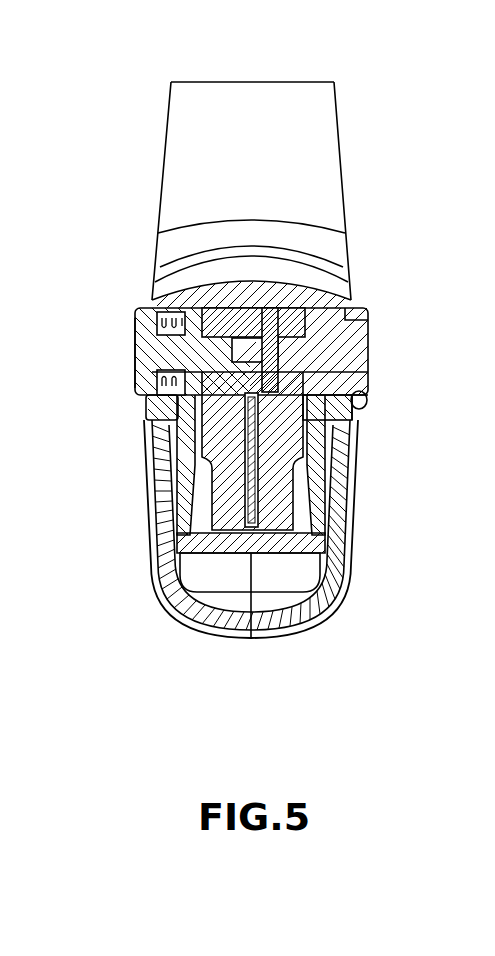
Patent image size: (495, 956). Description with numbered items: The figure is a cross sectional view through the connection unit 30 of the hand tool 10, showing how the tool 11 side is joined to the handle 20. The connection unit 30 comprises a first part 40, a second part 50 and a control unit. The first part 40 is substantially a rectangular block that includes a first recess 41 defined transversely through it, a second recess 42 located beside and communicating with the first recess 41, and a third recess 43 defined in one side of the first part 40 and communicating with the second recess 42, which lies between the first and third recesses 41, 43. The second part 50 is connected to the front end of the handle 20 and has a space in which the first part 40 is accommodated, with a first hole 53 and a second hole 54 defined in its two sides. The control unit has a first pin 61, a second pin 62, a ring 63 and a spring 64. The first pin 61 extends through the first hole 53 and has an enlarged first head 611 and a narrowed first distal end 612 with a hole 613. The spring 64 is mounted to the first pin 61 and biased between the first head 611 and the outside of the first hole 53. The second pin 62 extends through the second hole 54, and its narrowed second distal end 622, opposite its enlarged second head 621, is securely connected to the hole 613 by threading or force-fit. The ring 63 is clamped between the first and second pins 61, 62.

The hand tool 10 is at (148, 139).
The tool 11 is at (252, 478).
The handle 20 is at (345, 600).
The connection unit 30 is at (257, 342).
The first part 40 is at (278, 435).
The first recess 41 is at (152, 302).
The second recess 42 is at (266, 318).
The third recess 43 is at (306, 305).
The second part 50 is at (350, 300).
The first hole 53 is at (157, 437).
The second hole 54 is at (366, 406).
The first pin 61 is at (160, 347).
The first head 611 is at (135, 362).
The first distal end 612 is at (196, 253).
The hole 613 is at (198, 305).
The second pin 62 is at (345, 338).
The second head 621 is at (370, 378).
The second distal end 622 is at (355, 312).
The ring 63 is at (340, 362).
The spring 64 is at (157, 408).